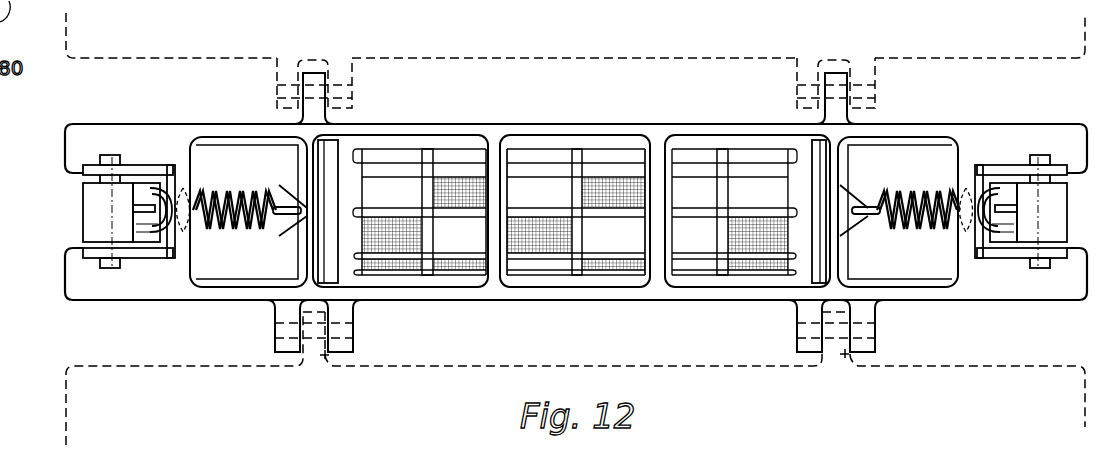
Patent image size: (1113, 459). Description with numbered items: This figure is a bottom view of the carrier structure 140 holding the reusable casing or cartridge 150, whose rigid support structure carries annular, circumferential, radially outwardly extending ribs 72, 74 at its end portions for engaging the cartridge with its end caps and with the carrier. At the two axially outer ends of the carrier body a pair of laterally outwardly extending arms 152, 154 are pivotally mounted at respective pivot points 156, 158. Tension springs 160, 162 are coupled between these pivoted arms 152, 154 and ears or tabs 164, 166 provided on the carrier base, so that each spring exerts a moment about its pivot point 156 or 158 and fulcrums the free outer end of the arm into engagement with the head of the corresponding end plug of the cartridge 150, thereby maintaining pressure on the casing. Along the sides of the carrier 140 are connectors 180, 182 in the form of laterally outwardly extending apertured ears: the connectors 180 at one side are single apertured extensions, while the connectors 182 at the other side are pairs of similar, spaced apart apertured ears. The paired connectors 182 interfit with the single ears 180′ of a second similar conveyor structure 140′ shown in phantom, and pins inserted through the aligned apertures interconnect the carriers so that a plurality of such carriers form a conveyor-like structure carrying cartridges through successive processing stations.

The carrier structure 140 is at (139, 110).
The second similar conveyor structure 140′ is at (555, 362).
The reusable casing or cartridge 150 is at (615, 236).
The laterally outwardly extending arm 152 is at (95, 203).
The laterally outwardly extending arm 154 is at (1095, 204).
The pivot point 156 is at (110, 263).
The pivot point 158 is at (1040, 263).
The tension spring 160 is at (934, 230).
The tension spring 162 is at (232, 230).
The ear or tab 164 is at (294, 211).
The ear or tab 166 is at (856, 211).
The annular circumferential radially outwardly extending rib 72 is at (818, 180).
The annular circumferential radially outwardly extending rib 74 is at (330, 200).
The connector 180 is at (326, 117).
The single ear 180′ is at (318, 356).
The connector 182 is at (292, 313).